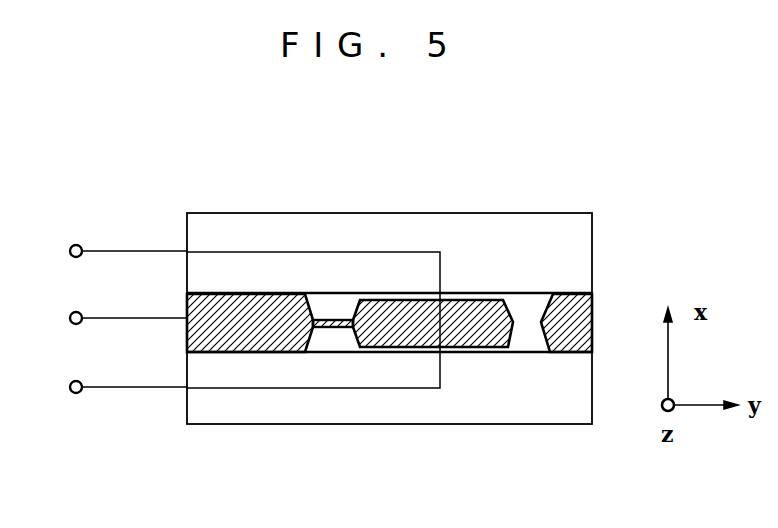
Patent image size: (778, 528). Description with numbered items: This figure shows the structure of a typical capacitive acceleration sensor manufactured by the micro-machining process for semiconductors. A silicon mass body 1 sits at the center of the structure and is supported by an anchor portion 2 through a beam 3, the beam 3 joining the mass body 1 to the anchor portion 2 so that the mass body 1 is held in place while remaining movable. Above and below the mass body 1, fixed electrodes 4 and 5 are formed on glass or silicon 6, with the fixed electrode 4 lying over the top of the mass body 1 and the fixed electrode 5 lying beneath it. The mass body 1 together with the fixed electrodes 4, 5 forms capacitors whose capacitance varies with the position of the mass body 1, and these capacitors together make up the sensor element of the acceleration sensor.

The silicon mass body 1 is at (460, 300).
The anchor portion 2 is at (258, 293).
The beam 3 is at (336, 320).
The fixed electrode 4 is at (502, 295).
The fixed electrode 5 is at (500, 353).
The glass or silicon 6 is at (207, 222).